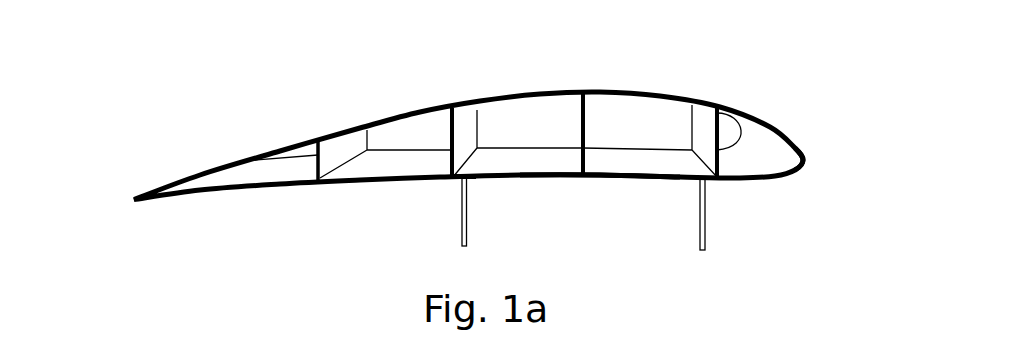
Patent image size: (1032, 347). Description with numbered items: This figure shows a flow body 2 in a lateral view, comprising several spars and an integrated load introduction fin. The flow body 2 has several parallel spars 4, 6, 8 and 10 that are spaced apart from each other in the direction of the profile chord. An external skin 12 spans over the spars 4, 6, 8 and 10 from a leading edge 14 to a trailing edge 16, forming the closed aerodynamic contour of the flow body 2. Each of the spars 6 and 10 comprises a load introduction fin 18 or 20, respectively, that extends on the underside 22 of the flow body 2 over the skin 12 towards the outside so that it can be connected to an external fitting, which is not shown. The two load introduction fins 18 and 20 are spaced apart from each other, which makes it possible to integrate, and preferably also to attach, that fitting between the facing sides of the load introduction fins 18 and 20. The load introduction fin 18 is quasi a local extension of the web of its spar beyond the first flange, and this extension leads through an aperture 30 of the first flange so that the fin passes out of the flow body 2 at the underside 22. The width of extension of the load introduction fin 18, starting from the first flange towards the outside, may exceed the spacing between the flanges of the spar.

The flow body 2 is at (783, 136).
The spar 4 is at (330, 156).
The spar 6 is at (463, 112).
The spar 8 is at (578, 107).
The spar 10 is at (703, 120).
The external skin 12 is at (760, 113).
The leading edge 14 is at (815, 173).
The trailing edge 16 is at (122, 198).
The load introduction fin 18 is at (462, 232).
The load introduction fin 20 is at (705, 233).
The underside 22 is at (620, 210).
The aperture 30 is at (478, 187).